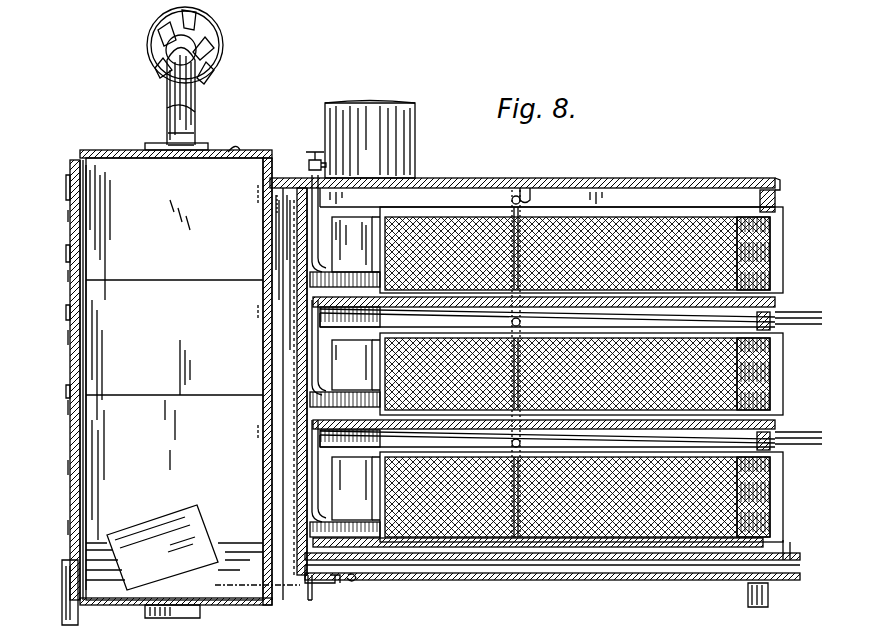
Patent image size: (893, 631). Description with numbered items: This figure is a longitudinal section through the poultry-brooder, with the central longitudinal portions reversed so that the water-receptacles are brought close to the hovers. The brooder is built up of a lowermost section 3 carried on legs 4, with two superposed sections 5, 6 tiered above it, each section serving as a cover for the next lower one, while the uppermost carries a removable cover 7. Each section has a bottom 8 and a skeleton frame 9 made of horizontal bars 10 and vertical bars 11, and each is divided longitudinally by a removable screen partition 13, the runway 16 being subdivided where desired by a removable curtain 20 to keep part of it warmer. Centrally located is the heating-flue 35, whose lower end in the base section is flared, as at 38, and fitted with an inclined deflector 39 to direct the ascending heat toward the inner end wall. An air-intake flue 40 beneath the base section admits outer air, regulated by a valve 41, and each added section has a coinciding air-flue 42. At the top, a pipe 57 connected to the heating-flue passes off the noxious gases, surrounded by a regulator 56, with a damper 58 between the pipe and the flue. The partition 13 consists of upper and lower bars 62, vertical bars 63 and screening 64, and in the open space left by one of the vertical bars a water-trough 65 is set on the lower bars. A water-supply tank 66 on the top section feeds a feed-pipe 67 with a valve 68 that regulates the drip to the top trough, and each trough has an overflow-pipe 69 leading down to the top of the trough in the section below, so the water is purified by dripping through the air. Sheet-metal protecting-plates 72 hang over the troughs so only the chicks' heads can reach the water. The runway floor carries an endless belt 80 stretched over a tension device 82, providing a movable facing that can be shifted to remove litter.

The lowermost section 3 is at (655, 562).
The legs 4 is at (748, 600).
The superposed section 5 is at (70, 362).
The superposed section 6 is at (80, 242).
The removable cover 7 is at (527, 186).
The bottom 8 is at (580, 548).
The skeleton frame 9 is at (776, 202).
The horizontal bars 10 is at (784, 333).
The vertical bars 11 is at (70, 268).
The removable screen partition 13 is at (783, 497).
The runway 16 is at (445, 535).
The removable curtain 20 is at (508, 500).
The heating-flue 35 is at (174, 379).
The flared lower end 38 is at (112, 600).
The inclined deflector 39 is at (174, 547).
The air-intake flue 40 is at (690, 578).
The valve 41 is at (348, 585).
The air-flue 42 is at (263, 358).
The regulator 56 is at (214, 47).
The pipe 57 is at (197, 115).
The damper 58 is at (234, 150).
The upper and lower bars 62 is at (547, 200).
The vertical bars 63 is at (376, 348).
The screening 64 is at (770, 240).
The water-trough 65 is at (310, 530).
The water-supply tank 66 is at (370, 140).
The feed-pipe 67 is at (292, 214).
The valve 68 is at (307, 158).
The overflow-pipe 69 is at (306, 600).
The protecting-plates 72 is at (368, 482).
The endless belt 80 is at (716, 436).
The tension device 82 is at (814, 444).